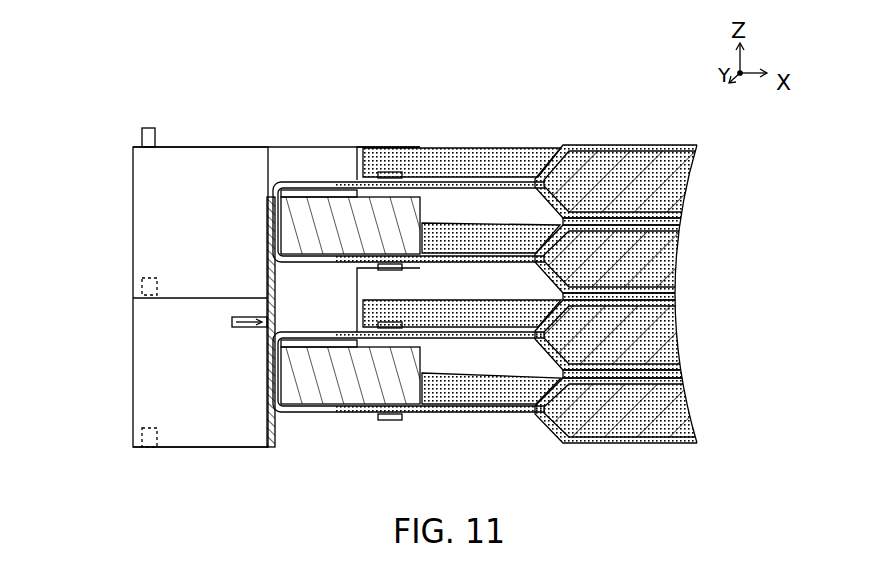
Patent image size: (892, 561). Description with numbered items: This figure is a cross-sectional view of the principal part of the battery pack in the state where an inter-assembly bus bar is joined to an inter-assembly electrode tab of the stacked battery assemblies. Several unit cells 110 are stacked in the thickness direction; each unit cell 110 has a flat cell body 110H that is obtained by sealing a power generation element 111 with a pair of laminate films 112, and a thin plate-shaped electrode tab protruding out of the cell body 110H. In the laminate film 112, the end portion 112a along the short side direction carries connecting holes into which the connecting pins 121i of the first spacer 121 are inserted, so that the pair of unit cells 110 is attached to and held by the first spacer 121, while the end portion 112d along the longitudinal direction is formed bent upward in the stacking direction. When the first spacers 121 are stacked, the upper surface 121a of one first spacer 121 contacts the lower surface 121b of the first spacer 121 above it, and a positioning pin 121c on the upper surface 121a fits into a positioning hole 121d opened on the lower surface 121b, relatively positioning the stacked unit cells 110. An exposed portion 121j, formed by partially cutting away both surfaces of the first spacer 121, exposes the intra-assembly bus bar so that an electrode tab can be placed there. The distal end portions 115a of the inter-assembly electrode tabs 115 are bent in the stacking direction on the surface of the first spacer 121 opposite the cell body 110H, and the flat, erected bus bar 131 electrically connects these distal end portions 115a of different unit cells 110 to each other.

The unit cell 110 is at (455, 363).
The cell body 110H is at (757, 127).
The power generation element 111 is at (697, 183).
The laminate film 112 is at (697, 146).
The end portion 112a is at (340, 179).
The end portion 112d is at (527, 153).
The inter-assembly electrode tab 115 is at (313, 183).
The distal end portion 115a is at (287, 190).
The first spacer 121 is at (133, 147).
The upper surface 121a is at (207, 147).
The lower surface 121b is at (198, 302).
The positioning pin 121c is at (151, 128).
The positioning hole 121d is at (142, 290).
The connecting pin 121i is at (389, 171).
The exposed portion 121j is at (268, 199).
The bus bar 131 is at (268, 383).